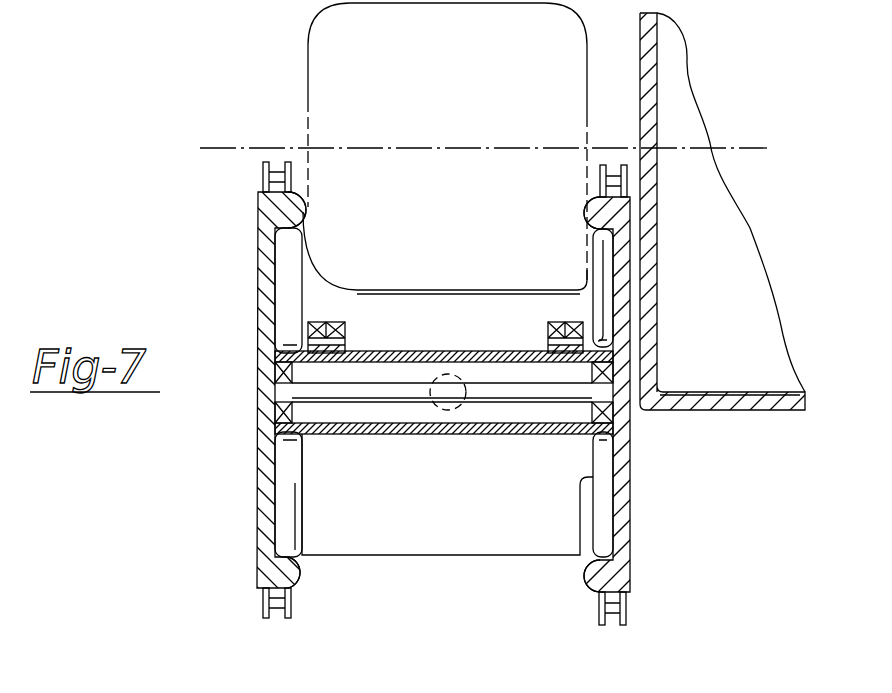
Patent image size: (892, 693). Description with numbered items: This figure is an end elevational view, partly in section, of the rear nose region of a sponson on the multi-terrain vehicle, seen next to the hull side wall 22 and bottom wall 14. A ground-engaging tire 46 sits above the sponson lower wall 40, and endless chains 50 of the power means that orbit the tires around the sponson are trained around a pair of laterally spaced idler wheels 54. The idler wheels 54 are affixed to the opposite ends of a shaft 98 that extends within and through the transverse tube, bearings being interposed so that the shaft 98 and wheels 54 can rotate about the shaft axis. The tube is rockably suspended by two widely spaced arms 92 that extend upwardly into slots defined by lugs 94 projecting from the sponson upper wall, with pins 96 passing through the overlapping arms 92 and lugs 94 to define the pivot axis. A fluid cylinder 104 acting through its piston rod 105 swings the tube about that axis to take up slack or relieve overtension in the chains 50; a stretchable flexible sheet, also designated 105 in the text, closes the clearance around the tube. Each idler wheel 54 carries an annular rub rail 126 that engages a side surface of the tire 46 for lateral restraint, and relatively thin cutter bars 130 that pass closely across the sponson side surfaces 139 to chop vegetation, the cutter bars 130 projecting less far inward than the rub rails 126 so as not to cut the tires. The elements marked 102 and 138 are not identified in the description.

The bottom wall 14 is at (773, 410).
The side wall 22 is at (660, 55).
The lower wall 40 is at (428, 545).
The ground-engaging tires 46 is at (306, 38).
The endless chains 50 is at (262, 168).
The idler wheels 54 is at (258, 244).
The arms 92 is at (445, 281).
The lugs 94 is at (313, 322).
The pins 96 is at (345, 340).
The shaft 98 is at (325, 420).
The bearings 102 is at (283, 414).
The fluid cylinder 104 is at (467, 405).
The piston rod 105 is at (365, 435).
The annular rub rail 126 is at (305, 205).
The cutter bars 130 is at (283, 277).
The inner wall 138 is at (596, 318).
The sponson side surfaces 139 is at (287, 332).